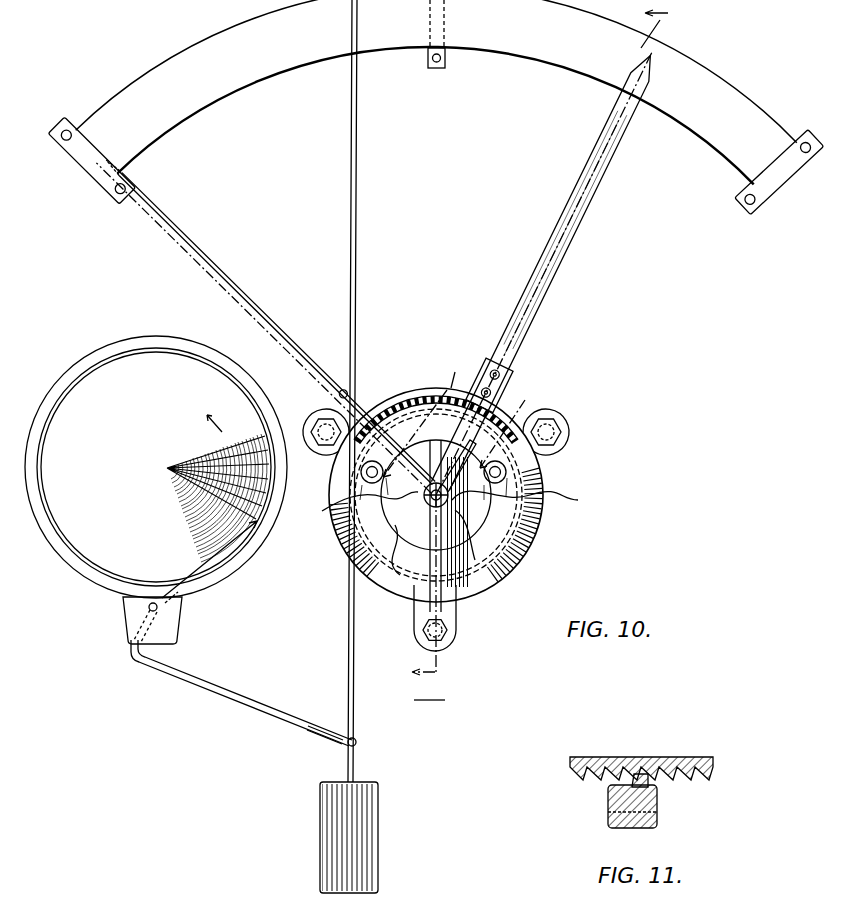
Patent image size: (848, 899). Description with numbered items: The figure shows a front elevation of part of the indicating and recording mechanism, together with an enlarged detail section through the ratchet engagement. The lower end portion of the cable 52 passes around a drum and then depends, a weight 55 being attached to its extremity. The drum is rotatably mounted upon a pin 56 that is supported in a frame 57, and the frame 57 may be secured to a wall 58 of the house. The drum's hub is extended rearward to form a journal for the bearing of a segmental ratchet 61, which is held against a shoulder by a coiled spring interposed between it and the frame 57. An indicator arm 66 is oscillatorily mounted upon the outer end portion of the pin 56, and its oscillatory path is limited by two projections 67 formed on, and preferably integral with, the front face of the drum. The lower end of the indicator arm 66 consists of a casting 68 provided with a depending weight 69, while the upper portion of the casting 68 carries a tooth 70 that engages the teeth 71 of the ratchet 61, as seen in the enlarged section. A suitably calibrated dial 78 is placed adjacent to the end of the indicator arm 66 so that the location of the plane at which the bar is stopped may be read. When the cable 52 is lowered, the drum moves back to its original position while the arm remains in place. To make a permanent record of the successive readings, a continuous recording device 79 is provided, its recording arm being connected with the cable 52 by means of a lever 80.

In FIG. 10, the cable 52 is at (360, 262).
In FIG. 10, the weight 55 is at (380, 832).
In FIG. 10, the pin 56 is at (436, 480).
In FIG. 10, the frame 57 is at (450, 610).
In FIG. 10, the wall 58 is at (575, 447).
In FIG. 10, the segmental ratchet 61 is at (405, 392).
In FIG. 11, the segmental ratchet 61 is at (655, 757).
In FIG. 10, the indicator arm 66 is at (245, 280).
In FIG. 10, the projections 67 is at (328, 512).
In FIG. 10, the casting 68 is at (448, 492).
In FIG. 11, the casting 68 is at (657, 812).
In FIG. 10, the depending weight 69 is at (384, 562).
In FIG. 11, the tooth 70 is at (634, 782).
In FIG. 10, the teeth 71 is at (388, 400).
In FIG. 11, the teeth 71 is at (578, 776).
In FIG. 10, the dial 78 is at (265, 76).
In FIG. 10, the continuous recording device 79 is at (133, 383).
In FIG. 10, the lever 80 is at (250, 705).